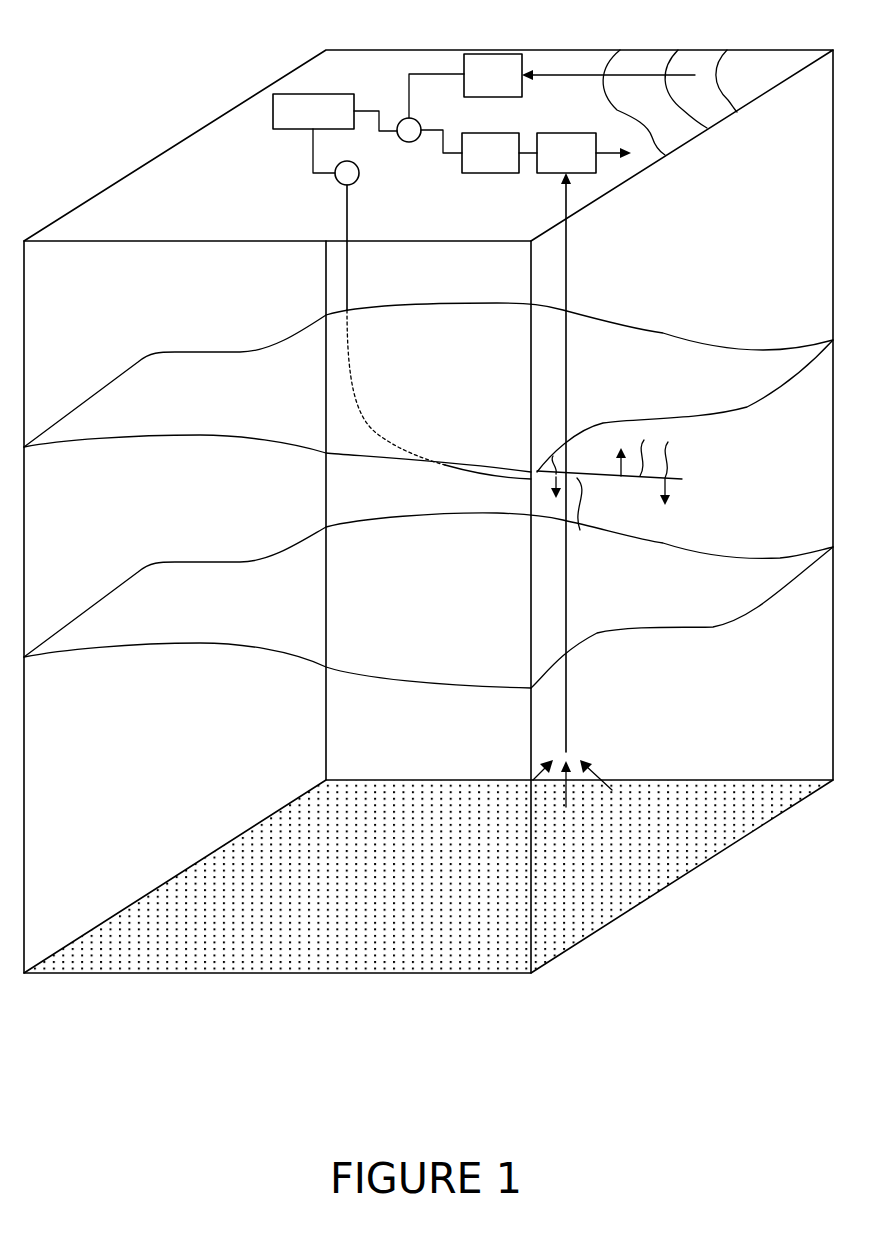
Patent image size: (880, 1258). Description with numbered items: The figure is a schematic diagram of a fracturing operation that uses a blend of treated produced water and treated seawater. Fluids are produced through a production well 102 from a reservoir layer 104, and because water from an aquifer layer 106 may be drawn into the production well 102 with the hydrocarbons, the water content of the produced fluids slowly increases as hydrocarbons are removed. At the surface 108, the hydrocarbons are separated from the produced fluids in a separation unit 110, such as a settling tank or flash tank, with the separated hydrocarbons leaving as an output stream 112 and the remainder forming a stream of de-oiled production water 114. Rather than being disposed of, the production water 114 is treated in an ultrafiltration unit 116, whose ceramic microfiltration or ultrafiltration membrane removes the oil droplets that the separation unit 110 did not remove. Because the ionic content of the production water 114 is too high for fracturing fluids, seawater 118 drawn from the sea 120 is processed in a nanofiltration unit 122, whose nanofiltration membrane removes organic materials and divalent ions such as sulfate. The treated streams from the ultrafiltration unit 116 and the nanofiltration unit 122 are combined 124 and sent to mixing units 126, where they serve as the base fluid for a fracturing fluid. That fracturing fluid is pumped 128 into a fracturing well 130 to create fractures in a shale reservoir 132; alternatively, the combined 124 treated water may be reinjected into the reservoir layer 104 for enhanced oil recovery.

The production well 102 is at (568, 270).
The reservoir layer 104 is at (27, 661).
The aquifer layer 106 is at (227, 975).
The surface 108 is at (147, 182).
The separation unit 110 is at (580, 174).
The produced hydrocarbon output 112 is at (608, 157).
The de-oiled production water (PW) 114 is at (528, 150).
The ultrafiltration unit 116 is at (480, 174).
The seawater (SW) 118 is at (552, 72).
The sea 120 is at (770, 60).
The nanofiltration unit 122 is at (498, 97).
The combining of treated water streams 124 is at (413, 143).
The mixing units 126 is at (285, 93).
The pumping of fracturing fluid 128 is at (338, 183).
The fracturing well 130 is at (350, 296).
The shale reservoir 132 is at (27, 448).